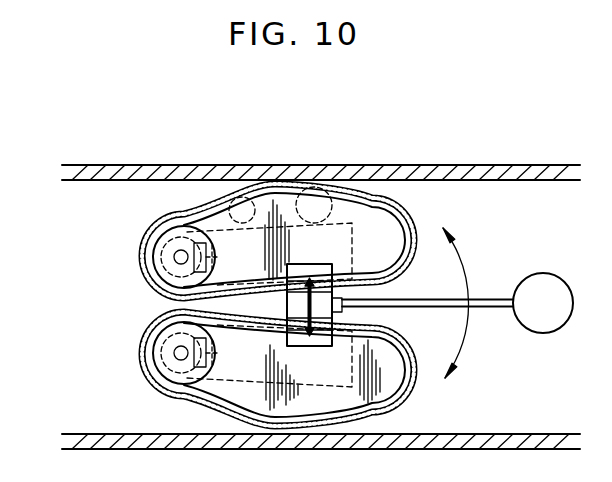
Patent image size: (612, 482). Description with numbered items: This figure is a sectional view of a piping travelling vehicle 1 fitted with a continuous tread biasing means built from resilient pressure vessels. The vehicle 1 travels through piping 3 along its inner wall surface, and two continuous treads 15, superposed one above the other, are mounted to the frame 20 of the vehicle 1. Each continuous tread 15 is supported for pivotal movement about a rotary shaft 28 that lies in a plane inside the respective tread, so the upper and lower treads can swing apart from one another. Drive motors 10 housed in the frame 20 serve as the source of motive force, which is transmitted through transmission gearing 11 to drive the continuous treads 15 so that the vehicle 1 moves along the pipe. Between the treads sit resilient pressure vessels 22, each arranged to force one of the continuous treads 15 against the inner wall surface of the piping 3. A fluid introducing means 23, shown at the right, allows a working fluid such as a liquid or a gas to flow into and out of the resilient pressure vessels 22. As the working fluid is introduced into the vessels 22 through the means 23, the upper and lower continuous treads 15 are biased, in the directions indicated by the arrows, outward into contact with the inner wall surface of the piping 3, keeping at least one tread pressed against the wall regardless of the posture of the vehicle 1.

The vehicle 1 is at (118, 318).
The piping 3 is at (117, 176).
The drive motor 10 is at (277, 192).
The transmission gearing 11 is at (206, 207).
The continuous tread 15 is at (140, 247).
The frame 20 is at (387, 373).
The resilient pressure vessel 22 is at (336, 252).
The fluid introducing means 23 is at (538, 274).
The rotary shaft 28 is at (175, 352).